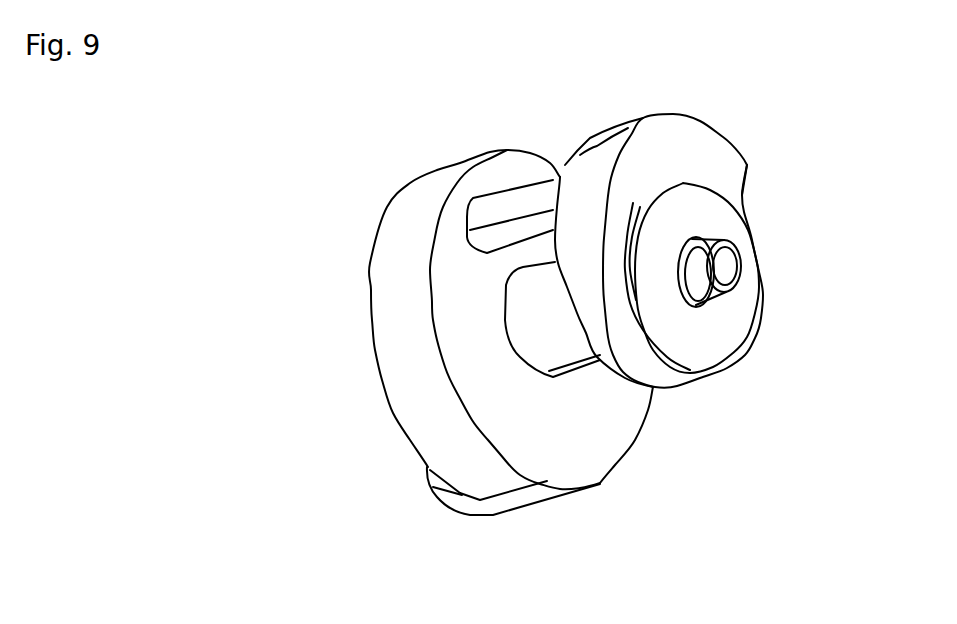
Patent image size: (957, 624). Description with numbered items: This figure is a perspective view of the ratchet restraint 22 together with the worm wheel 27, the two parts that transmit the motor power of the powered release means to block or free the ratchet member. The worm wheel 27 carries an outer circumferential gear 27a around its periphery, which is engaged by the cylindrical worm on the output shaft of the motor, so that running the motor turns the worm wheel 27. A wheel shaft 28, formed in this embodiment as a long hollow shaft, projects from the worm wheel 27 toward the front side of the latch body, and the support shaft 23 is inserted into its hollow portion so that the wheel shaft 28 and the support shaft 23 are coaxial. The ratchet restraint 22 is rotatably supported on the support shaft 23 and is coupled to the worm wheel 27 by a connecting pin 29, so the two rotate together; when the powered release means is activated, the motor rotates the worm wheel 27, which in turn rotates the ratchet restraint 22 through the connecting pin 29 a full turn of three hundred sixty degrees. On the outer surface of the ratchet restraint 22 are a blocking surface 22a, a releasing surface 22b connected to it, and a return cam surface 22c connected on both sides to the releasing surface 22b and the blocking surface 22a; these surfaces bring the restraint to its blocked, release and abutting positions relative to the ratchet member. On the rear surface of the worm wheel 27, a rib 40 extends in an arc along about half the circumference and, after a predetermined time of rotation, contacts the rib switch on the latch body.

The ratchet restraint 22 is at (652, 152).
The blocking surface 22a is at (719, 138).
The releasing surface 22b is at (742, 195).
The return cam surface 22c is at (586, 240).
The support shaft 23 is at (741, 267).
The worm wheel 27 is at (587, 435).
The outer circumferential gear 27a is at (397, 273).
The wheel shaft 28 is at (533, 308).
The connecting pin 29 is at (497, 210).
The rib 40 is at (430, 488).